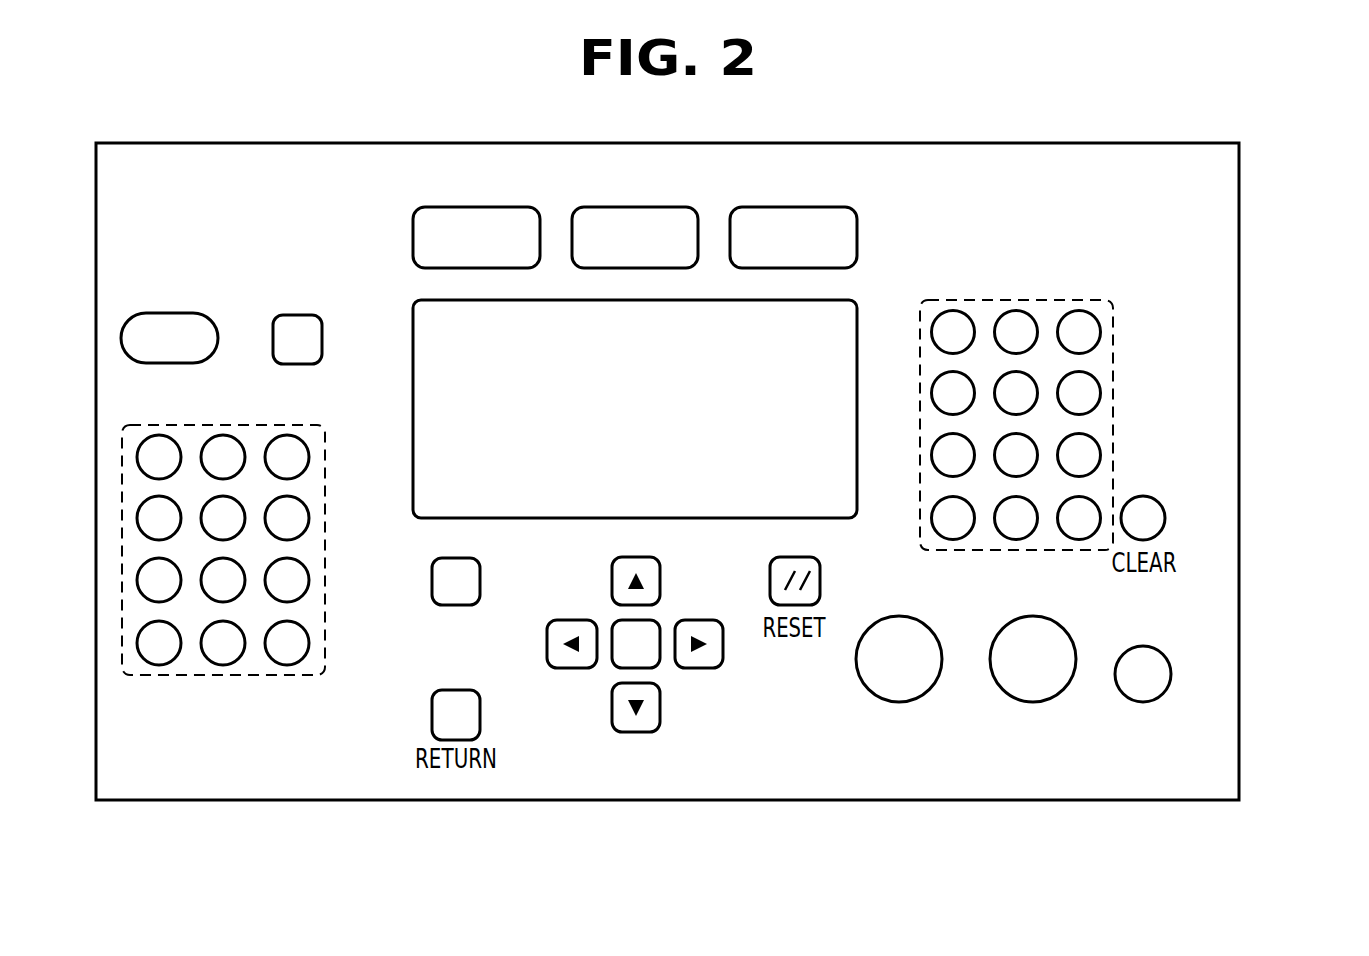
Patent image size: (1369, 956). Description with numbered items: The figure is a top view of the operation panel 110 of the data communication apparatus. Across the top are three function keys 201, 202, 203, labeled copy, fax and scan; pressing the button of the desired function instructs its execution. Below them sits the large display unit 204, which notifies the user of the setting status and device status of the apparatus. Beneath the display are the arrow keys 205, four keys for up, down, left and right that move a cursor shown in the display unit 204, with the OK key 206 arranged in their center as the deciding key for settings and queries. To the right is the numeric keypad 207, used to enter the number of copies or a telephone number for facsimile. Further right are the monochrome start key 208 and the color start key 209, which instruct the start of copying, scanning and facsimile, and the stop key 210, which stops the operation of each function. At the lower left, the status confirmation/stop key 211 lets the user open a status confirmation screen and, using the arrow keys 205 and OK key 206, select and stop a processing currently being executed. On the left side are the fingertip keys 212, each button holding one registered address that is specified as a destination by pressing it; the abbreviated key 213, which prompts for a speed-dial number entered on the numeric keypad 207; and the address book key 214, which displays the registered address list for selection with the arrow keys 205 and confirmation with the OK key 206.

The operation panel 110 is at (1239, 263).
The function key 201 is at (477, 207).
The function key 202 is at (615, 207).
The function key 203 is at (762, 207).
The display unit 204 is at (413, 345).
The arrow keys 205 is at (668, 722).
The OK key 206 is at (653, 622).
The numeric keypad 207 is at (1068, 290).
The monochrome start key 208 is at (899, 616).
The color start key 209 is at (1033, 616).
The stop key 210 is at (1143, 646).
The status confirmation/stop key 211 is at (455, 558).
The fingertip keys 212 is at (340, 493).
The abbreviated key 213 is at (297, 315).
The address book key 214 is at (167, 313).